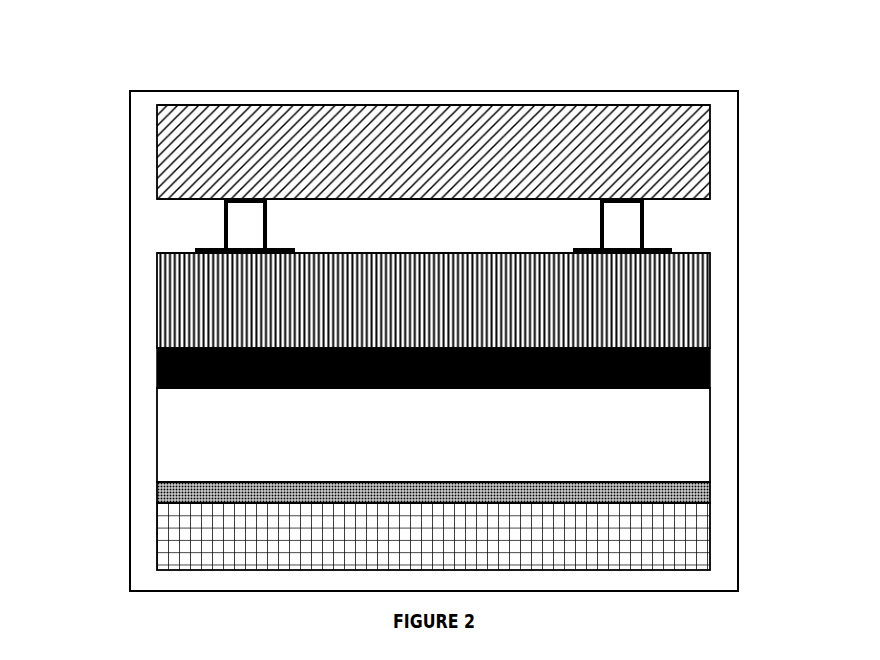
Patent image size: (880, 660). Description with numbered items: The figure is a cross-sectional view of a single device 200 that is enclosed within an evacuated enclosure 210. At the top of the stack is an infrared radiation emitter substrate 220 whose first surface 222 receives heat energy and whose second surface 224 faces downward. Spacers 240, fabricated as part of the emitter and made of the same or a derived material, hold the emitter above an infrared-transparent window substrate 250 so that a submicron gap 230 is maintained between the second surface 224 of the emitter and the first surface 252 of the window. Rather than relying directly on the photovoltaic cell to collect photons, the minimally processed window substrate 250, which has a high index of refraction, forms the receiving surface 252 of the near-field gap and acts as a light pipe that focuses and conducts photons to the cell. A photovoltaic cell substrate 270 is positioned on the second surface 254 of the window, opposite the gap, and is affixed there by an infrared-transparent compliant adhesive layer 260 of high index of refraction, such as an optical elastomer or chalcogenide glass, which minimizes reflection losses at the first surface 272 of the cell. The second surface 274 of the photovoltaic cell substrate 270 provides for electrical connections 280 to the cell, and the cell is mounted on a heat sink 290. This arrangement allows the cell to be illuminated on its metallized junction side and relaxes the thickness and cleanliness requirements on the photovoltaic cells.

The device 200 is at (167, 40).
The evacuated enclosure 210 is at (264, 78).
The infrared radiation emitter substrate 220 is at (143, 152).
The first surface of the infrared radiation emitter substrate 222 is at (683, 106).
The second surface of the infrared radiation emitter substrate 224 is at (683, 199).
The submicron gap 230 is at (172, 213).
The spacers 240 is at (212, 239).
The infrared-transparent window substrate 250 is at (143, 307).
The first surface of the infrared-transparent window substrate 252 is at (692, 258).
The second surface of the infrared-transparent window substrate 254 is at (690, 345).
The infrared-transparent compliant adhesive layer 260 is at (143, 367).
The photovoltaic cell substrate 270 is at (143, 443).
The first surface of the photovoltaic cell substrate 272 is at (690, 390).
The second surface of the photovoltaic cell substrate 274 is at (690, 480).
The electrical connections 280 is at (143, 496).
The heat sink 290 is at (143, 543).